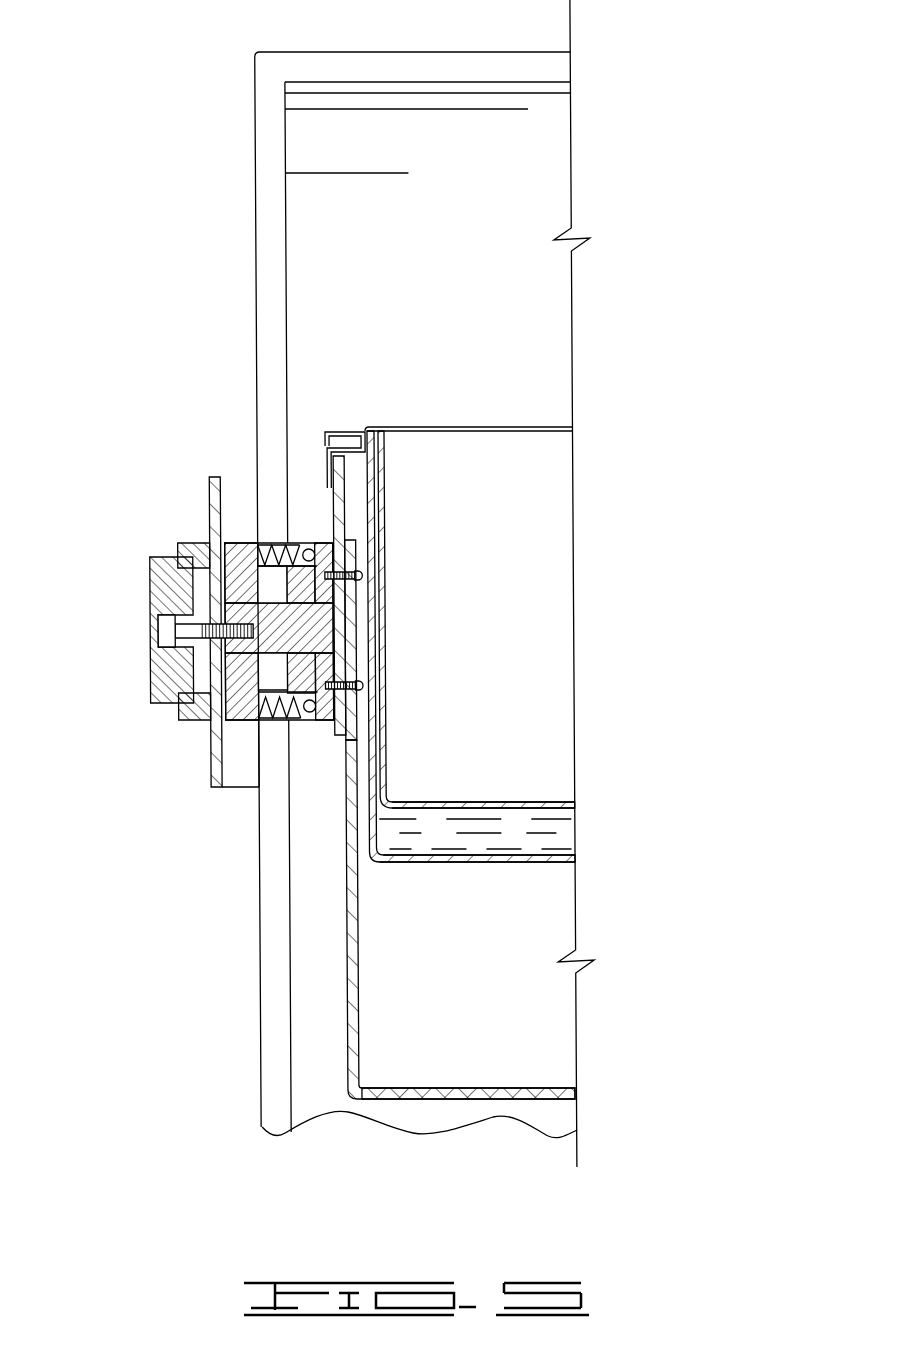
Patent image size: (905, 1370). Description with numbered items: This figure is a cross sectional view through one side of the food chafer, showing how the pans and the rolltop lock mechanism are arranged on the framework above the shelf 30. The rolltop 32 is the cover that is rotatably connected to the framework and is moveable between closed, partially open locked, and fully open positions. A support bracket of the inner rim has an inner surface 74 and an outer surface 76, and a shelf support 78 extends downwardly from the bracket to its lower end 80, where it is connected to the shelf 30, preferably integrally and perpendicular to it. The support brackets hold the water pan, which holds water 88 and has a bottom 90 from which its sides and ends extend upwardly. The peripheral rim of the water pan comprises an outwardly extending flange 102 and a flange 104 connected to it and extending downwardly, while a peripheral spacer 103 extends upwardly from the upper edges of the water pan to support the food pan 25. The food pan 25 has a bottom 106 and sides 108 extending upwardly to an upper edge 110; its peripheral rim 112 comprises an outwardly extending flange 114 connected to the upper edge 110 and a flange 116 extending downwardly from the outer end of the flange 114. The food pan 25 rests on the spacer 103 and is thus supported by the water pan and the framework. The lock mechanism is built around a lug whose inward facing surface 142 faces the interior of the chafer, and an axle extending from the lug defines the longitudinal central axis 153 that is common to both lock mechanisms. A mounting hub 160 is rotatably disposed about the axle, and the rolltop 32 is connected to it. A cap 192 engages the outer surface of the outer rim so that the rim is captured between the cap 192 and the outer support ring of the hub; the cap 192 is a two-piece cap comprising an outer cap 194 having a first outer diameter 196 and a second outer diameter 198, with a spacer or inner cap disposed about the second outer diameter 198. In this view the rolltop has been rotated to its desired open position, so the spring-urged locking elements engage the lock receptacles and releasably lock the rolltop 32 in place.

The food pan 25 is at (386, 497).
The shelf 30 is at (475, 1100).
The rolltop 32 is at (258, 102).
The inner surface 74 is at (347, 521).
The outer surface 76 is at (332, 510).
The shelf support 78 is at (382, 803).
The lower end 80 is at (341, 1090).
The water 88 is at (398, 832).
The bottom 90 is at (529, 862).
The outwardly extending flange 102 is at (346, 428).
The peripheral spacer 103 is at (386, 438).
The flange 104 is at (329, 470).
The bottom 106 is at (514, 802).
The sides 108 is at (386, 612).
The upper edge 110 is at (382, 429).
The peripheral rim 112 is at (431, 374).
The outwardly extending flange 114 is at (380, 428).
The flange 116 is at (327, 435).
The inward facing surface 142 is at (360, 665).
The longitudinal central axis 153 is at (158, 631).
The mounting hub 160 is at (258, 724).
The cap 192 is at (100, 630).
The outer cap 194 is at (165, 678).
The first outer diameter 196 is at (178, 553).
The second outer diameter 198 is at (178, 712).